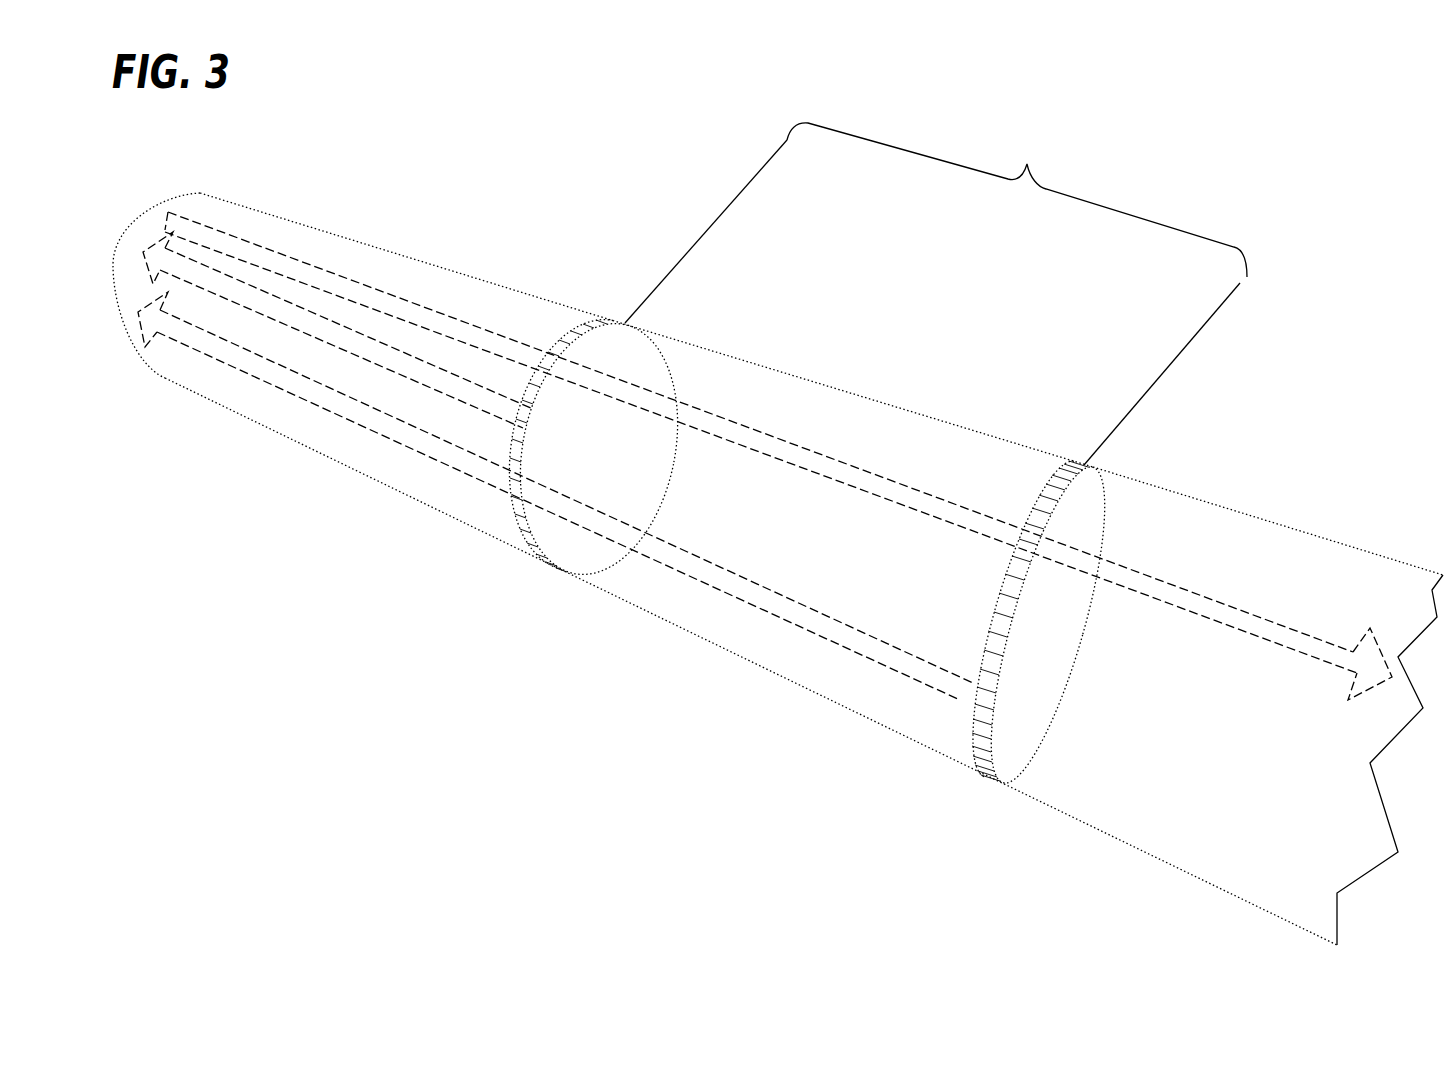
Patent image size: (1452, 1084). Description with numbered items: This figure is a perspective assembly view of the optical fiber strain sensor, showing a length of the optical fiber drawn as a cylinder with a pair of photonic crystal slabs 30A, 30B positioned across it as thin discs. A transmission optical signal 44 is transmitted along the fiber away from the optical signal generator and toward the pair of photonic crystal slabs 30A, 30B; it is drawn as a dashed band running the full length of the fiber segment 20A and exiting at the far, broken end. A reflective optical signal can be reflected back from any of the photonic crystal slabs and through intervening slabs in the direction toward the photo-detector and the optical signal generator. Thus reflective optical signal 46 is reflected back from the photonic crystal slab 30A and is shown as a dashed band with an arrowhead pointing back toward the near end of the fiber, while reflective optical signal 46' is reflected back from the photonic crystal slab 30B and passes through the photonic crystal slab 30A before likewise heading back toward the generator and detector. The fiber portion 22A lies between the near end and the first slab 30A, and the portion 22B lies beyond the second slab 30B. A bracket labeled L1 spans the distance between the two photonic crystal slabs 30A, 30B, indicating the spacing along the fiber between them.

The waveguide section 20A is at (277, 233).
The first portion 22A is at (712, 375).
The second portion 22B is at (1172, 512).
The photonic crystal slab 30A is at (517, 510).
The photonic crystal slab 30B is at (973, 722).
The transmission optical signal 44 is at (443, 323).
The reflective optical signal 46 is at (338, 391).
The reflective optical signal 46' is at (555, 496).
The length L1 is at (936, 294).